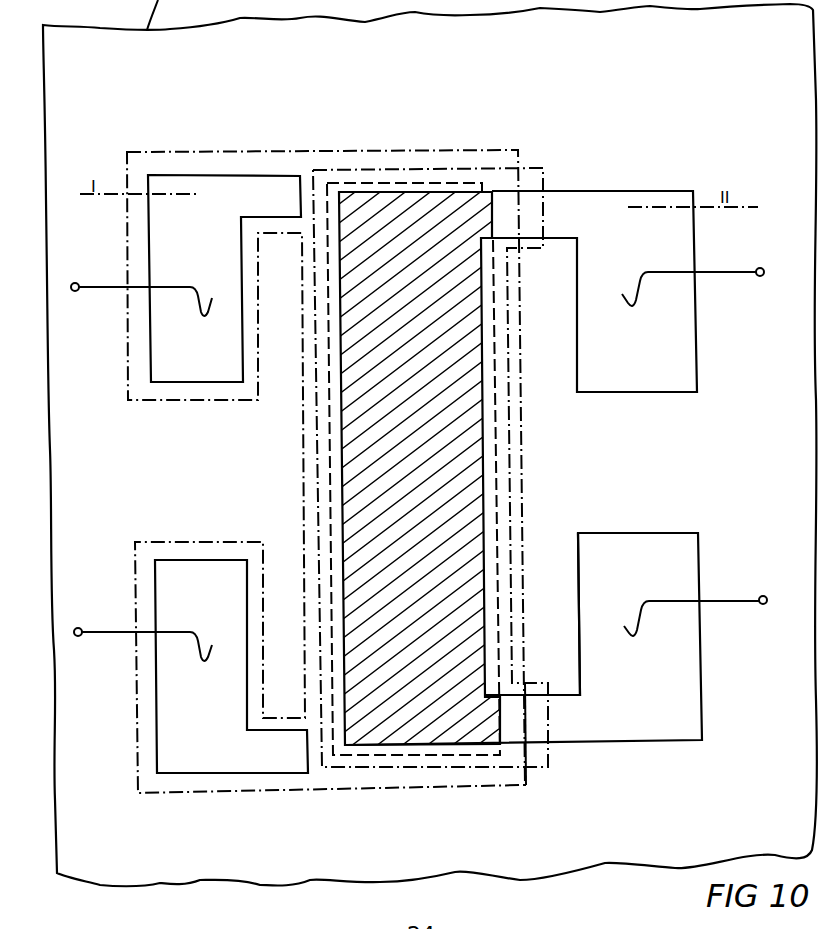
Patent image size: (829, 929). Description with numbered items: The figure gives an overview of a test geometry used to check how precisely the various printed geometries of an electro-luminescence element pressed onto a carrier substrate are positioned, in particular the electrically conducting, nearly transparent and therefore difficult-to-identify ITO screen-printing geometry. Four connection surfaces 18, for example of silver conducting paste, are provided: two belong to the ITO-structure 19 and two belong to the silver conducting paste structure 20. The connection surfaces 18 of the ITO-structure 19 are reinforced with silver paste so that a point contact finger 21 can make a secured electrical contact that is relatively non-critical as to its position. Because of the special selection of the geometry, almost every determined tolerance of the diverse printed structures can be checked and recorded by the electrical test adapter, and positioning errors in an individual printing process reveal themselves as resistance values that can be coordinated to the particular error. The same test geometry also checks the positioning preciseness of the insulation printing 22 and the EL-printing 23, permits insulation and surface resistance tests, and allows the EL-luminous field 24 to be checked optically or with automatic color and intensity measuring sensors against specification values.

The connection surfaces 18 is at (150, 355).
The ITO-structure 19 is at (252, 152).
The conducting paste structure 20 is at (568, 703).
The point contact finger 21 is at (98, 290).
The insulation printing 22 is at (528, 168).
The EL-printing 23 is at (395, 178).
The luminous field 24 is at (428, 707).